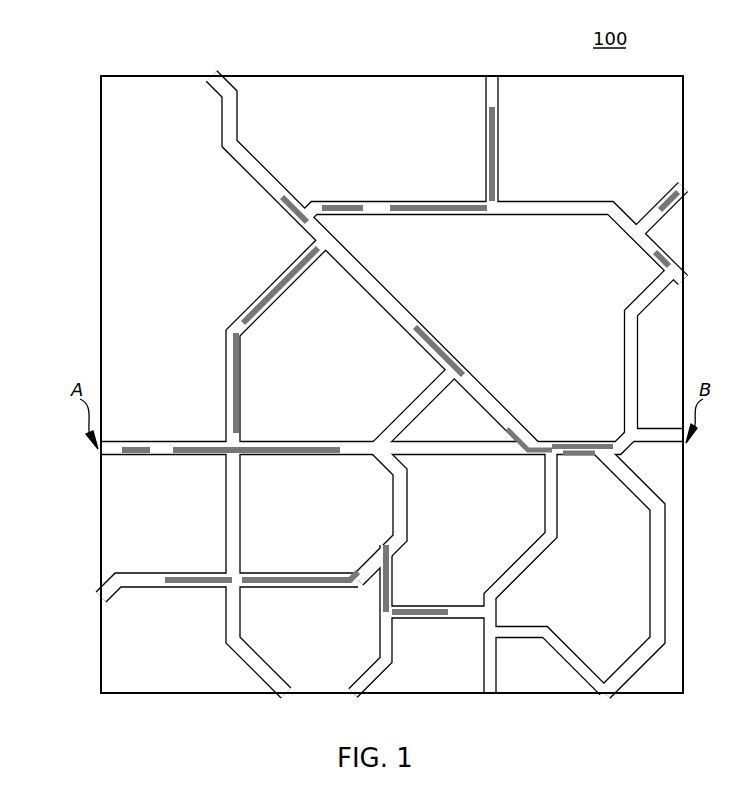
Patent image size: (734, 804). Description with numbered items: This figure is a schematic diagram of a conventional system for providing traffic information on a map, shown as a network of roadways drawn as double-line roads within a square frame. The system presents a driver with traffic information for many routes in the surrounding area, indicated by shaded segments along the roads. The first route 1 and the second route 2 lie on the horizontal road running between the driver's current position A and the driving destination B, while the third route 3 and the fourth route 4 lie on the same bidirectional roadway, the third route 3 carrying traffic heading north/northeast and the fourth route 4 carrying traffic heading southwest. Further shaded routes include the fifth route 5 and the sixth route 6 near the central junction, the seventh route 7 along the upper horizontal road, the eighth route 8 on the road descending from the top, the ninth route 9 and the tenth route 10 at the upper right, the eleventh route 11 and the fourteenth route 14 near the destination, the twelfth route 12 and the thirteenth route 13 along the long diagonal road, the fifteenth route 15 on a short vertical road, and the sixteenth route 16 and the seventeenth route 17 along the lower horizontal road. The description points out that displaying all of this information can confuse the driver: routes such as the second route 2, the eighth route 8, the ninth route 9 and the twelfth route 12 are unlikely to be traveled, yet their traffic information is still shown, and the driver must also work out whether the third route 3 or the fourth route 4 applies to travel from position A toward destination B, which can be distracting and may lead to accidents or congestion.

The route r1 1 is at (148, 455).
The route r2 2 is at (287, 455).
The route r3 3 is at (247, 328).
The route r4 4 is at (246, 313).
The route r5 5 is at (286, 213).
The route r6 6 is at (352, 216).
The route r7 7 is at (437, 203).
The route r8 8 is at (498, 128).
The route r9 9 is at (681, 210).
The route r10 10 is at (652, 262).
The route r11 11 is at (568, 443).
The route r12 12 is at (441, 340).
The route r13 13 is at (520, 452).
The route r14 14 is at (581, 457).
The route r15 15 is at (392, 563).
The route r16 16 is at (296, 590).
The route r17 17 is at (185, 590).